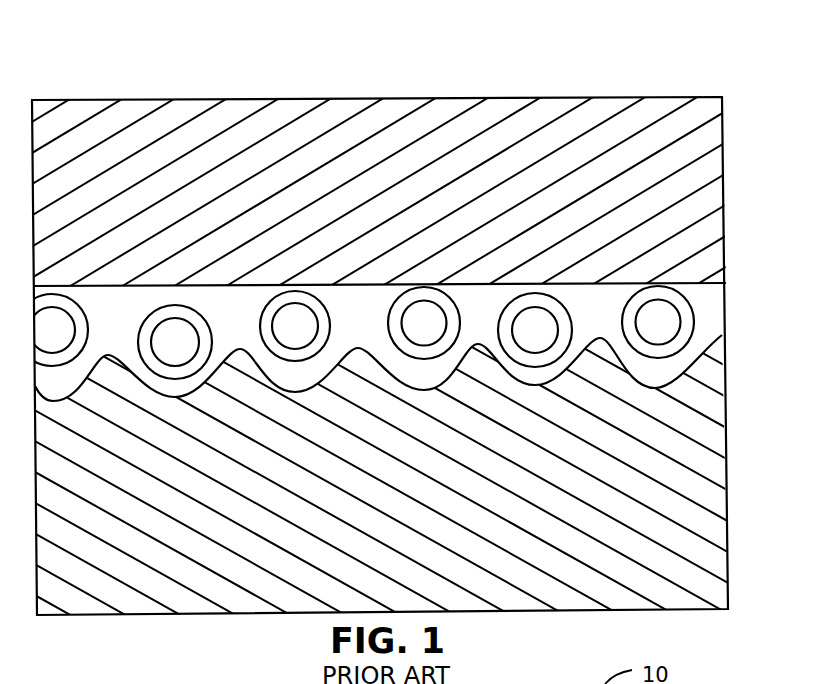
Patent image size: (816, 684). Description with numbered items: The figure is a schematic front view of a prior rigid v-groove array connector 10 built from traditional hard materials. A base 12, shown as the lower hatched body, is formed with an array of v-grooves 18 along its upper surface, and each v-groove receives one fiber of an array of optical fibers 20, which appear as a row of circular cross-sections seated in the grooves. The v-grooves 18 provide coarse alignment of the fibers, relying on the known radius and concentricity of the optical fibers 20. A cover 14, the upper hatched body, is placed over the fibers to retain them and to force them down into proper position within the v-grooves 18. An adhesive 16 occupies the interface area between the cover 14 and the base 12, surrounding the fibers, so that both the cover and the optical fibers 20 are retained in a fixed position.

The v-groove array connector 10 is at (582, 76).
The base 12 is at (150, 585).
The cover 14 is at (168, 122).
The adhesive 16 is at (236, 307).
The v-grooves 18 is at (667, 400).
The optical fibers 20 is at (667, 317).